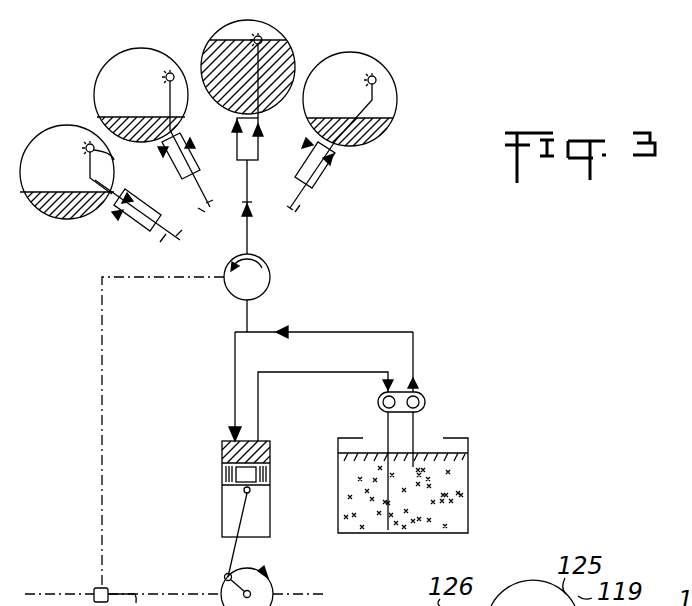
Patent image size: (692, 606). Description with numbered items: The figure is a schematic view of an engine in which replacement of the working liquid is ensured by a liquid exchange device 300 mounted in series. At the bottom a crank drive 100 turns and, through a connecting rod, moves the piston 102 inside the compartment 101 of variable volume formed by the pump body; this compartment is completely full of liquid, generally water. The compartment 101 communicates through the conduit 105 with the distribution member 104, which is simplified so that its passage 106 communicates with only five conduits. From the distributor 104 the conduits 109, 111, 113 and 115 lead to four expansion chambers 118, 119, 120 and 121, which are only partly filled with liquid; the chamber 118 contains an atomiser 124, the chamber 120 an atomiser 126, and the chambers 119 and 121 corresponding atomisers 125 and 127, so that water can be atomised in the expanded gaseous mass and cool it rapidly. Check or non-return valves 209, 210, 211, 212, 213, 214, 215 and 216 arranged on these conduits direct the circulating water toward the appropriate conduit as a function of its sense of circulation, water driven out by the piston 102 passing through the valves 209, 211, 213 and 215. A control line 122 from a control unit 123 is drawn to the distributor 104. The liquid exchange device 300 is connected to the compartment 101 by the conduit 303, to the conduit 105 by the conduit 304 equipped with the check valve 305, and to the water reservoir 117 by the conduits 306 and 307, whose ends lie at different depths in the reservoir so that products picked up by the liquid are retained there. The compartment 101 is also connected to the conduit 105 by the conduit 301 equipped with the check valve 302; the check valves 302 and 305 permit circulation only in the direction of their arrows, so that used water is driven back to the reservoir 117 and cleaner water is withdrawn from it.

The crank drive 100 is at (309, 586).
The compartment of variable volume 101 is at (233, 450).
The piston 102 is at (237, 478).
The distribution member 104 is at (270, 281).
The conduit 105 is at (247, 318).
The passage 106 is at (252, 240).
The conduit 109 is at (302, 206).
The conduit 111 is at (247, 184).
The conduit 113 is at (204, 171).
The conduit 115 is at (138, 224).
The liquid reservoir 117 is at (462, 453).
The expansion chamber 118 is at (397, 95).
The expansion chamber 119 is at (290, 56).
The expansion chamber 120 is at (137, 48).
The expansion chamber 121 is at (42, 130).
The control line 122 is at (102, 495).
The control unit 123 is at (108, 590).
The atomiser 124 is at (376, 78).
The level sensor 125 is at (262, 40).
The atomiser 126 is at (172, 70).
The level sensor 127 is at (123, 167).
The check valve 209 is at (330, 166).
The check valve 210 is at (337, 148).
The check valve 211 is at (259, 144).
The check valve 212 is at (259, 120).
The check valve 213 is at (193, 146).
The check valve 214 is at (180, 140).
The check valve 215 is at (134, 200).
The check valve 216 is at (118, 220).
The liquid exchange device 300 is at (426, 398).
The conduit 301 is at (234, 396).
The check valve 302 is at (230, 430).
The conduit 303 is at (290, 372).
The conduit 304 is at (418, 346).
The check valve 305 is at (284, 332).
The conduit 306 is at (386, 428).
The conduit 307 is at (415, 428).